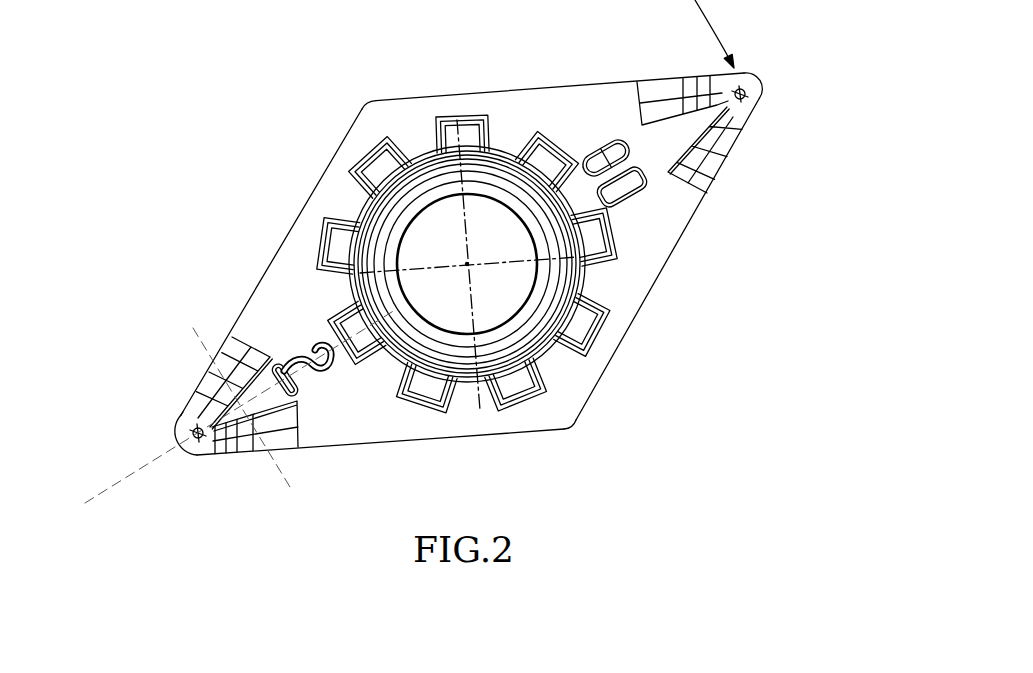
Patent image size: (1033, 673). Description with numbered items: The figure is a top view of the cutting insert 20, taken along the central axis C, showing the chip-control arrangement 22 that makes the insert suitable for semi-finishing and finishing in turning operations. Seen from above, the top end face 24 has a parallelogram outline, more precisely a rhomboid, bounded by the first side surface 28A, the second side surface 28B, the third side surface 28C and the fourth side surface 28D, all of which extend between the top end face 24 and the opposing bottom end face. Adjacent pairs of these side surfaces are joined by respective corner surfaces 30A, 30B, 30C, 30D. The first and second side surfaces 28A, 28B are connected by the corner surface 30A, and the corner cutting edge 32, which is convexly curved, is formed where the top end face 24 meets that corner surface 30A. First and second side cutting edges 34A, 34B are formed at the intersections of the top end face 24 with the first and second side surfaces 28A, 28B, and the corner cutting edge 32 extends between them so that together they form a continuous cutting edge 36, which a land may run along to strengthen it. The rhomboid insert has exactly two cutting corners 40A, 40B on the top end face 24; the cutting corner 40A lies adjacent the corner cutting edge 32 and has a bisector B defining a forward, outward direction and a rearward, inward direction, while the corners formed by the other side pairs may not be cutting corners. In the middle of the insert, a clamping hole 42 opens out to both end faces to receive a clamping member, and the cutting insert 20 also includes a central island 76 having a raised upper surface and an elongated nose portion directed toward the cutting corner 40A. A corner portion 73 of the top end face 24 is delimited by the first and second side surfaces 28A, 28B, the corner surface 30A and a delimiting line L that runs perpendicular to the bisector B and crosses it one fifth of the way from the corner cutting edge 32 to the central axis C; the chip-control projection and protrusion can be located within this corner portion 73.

The cutting insert 20 is at (188, 165).
The chip-control arrangement 22 is at (173, 405).
The top end face 24 is at (568, 108).
The first side surface 28A is at (274, 257).
The second side surface 28B is at (410, 444).
The third side surface 28C is at (645, 300).
The fourth side surface 28D is at (525, 90).
The corner surface 30A is at (218, 462).
The corner surface 30B is at (573, 427).
The corner surface 30C is at (763, 98).
The corner surface 30D is at (366, 102).
The corner cutting edge 32 is at (177, 432).
The first side cutting edge 34A is at (215, 378).
The second side cutting edge 34B is at (252, 460).
The continuous cutting edge 36 is at (231, 450).
The cutting corner 40A is at (177, 457).
The cutting corner 40B is at (750, 76).
The clamping hole 42 is at (505, 182).
The corner portion 73 is at (246, 462).
The central island 76 is at (414, 422).
The bisector B is at (231, 419).
The central axis C is at (467, 262).
The delimiting line L is at (248, 420).